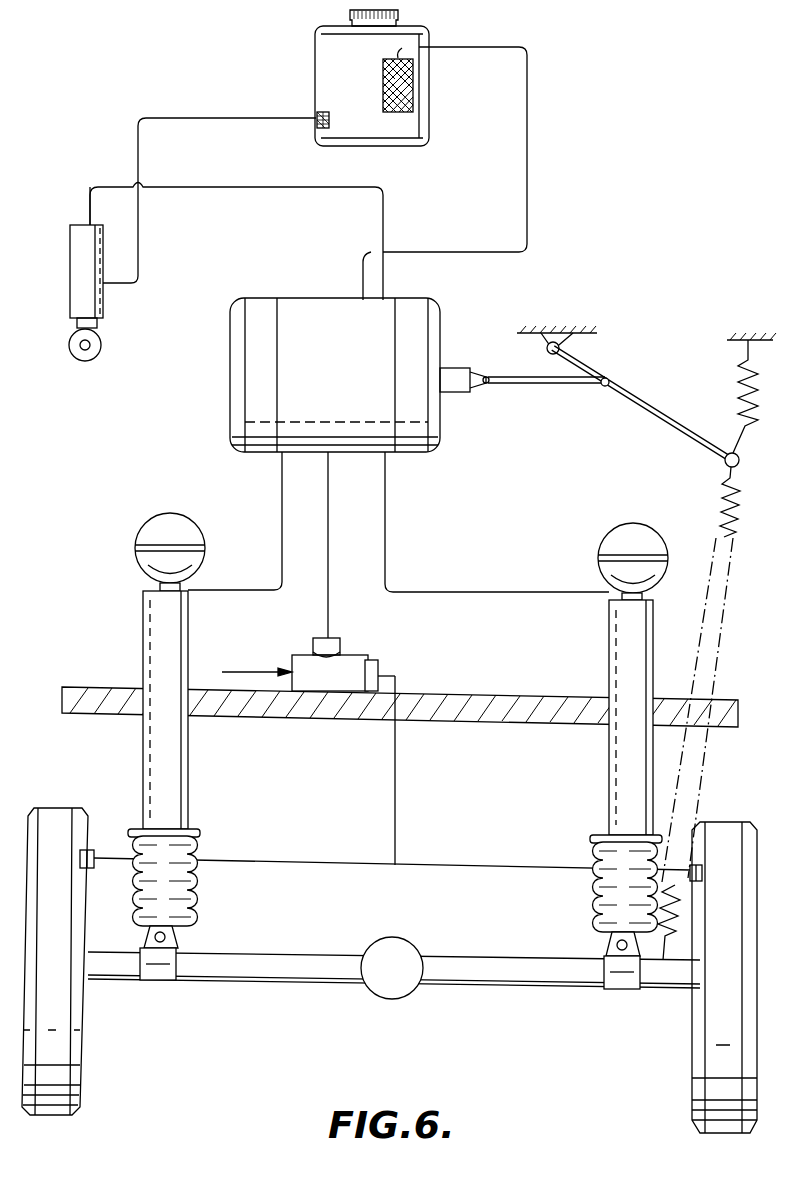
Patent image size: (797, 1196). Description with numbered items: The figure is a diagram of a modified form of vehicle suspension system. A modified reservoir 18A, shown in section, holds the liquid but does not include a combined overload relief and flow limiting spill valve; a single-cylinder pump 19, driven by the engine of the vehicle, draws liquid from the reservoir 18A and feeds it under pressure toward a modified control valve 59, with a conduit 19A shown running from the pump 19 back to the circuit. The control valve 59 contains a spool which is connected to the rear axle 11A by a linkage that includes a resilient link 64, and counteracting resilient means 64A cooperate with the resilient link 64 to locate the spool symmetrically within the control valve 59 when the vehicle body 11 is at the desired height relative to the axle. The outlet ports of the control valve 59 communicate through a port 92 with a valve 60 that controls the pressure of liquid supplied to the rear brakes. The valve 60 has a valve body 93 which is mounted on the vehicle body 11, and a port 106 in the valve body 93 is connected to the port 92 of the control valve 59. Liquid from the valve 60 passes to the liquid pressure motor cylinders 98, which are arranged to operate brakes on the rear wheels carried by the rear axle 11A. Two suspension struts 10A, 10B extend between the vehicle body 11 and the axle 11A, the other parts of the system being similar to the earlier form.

The modified reservoir 18A is at (318, 75).
The conduit to pump 19A is at (93, 222).
The single-cylinder pump 19 is at (80, 276).
The modified control valve 59 is at (295, 382).
The port 92 is at (330, 455).
The port 106 is at (330, 640).
The valve body 93 is at (303, 660).
The valve 60 is at (348, 675).
The vehicle body 11 is at (516, 708).
The left strut 10A is at (158, 636).
The right strut 10B is at (612, 684).
The liquid pressure motor cylinders 98 is at (92, 852).
The counteracting resilient means 64A is at (735, 388).
The resilient link 64 is at (720, 490).
The rear axle 11A is at (278, 962).